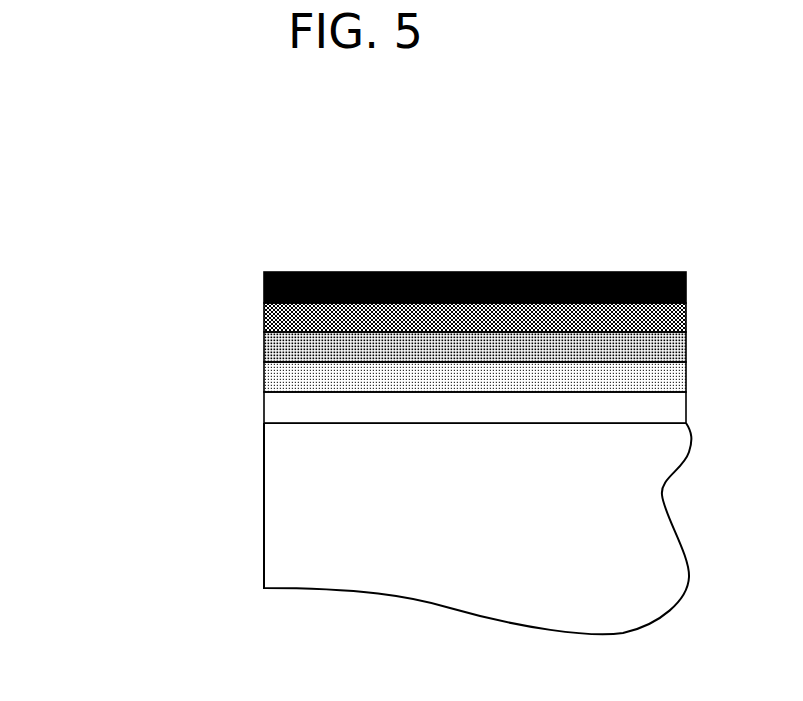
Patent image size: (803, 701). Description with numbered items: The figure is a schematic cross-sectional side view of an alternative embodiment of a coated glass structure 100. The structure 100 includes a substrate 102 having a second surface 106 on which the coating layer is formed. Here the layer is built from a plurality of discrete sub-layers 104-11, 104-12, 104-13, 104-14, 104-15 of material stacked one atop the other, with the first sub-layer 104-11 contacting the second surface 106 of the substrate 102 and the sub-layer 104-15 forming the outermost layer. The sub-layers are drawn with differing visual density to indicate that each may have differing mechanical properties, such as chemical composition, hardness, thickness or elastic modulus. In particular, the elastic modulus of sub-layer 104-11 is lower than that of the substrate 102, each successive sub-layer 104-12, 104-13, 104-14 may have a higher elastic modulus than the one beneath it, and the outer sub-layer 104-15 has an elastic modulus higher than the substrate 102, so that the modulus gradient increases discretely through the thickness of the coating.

The structure 100 is at (430, 164).
The substrate 102 is at (264, 490).
The second surface 106 is at (550, 423).
The sub-layer 104-11 is at (264, 408).
The sub-layer 104-12 is at (264, 377).
The sub-layer 104-13 is at (264, 352).
The sub-layer 104-14 is at (264, 318).
The sub-layer 104-15 is at (264, 289).